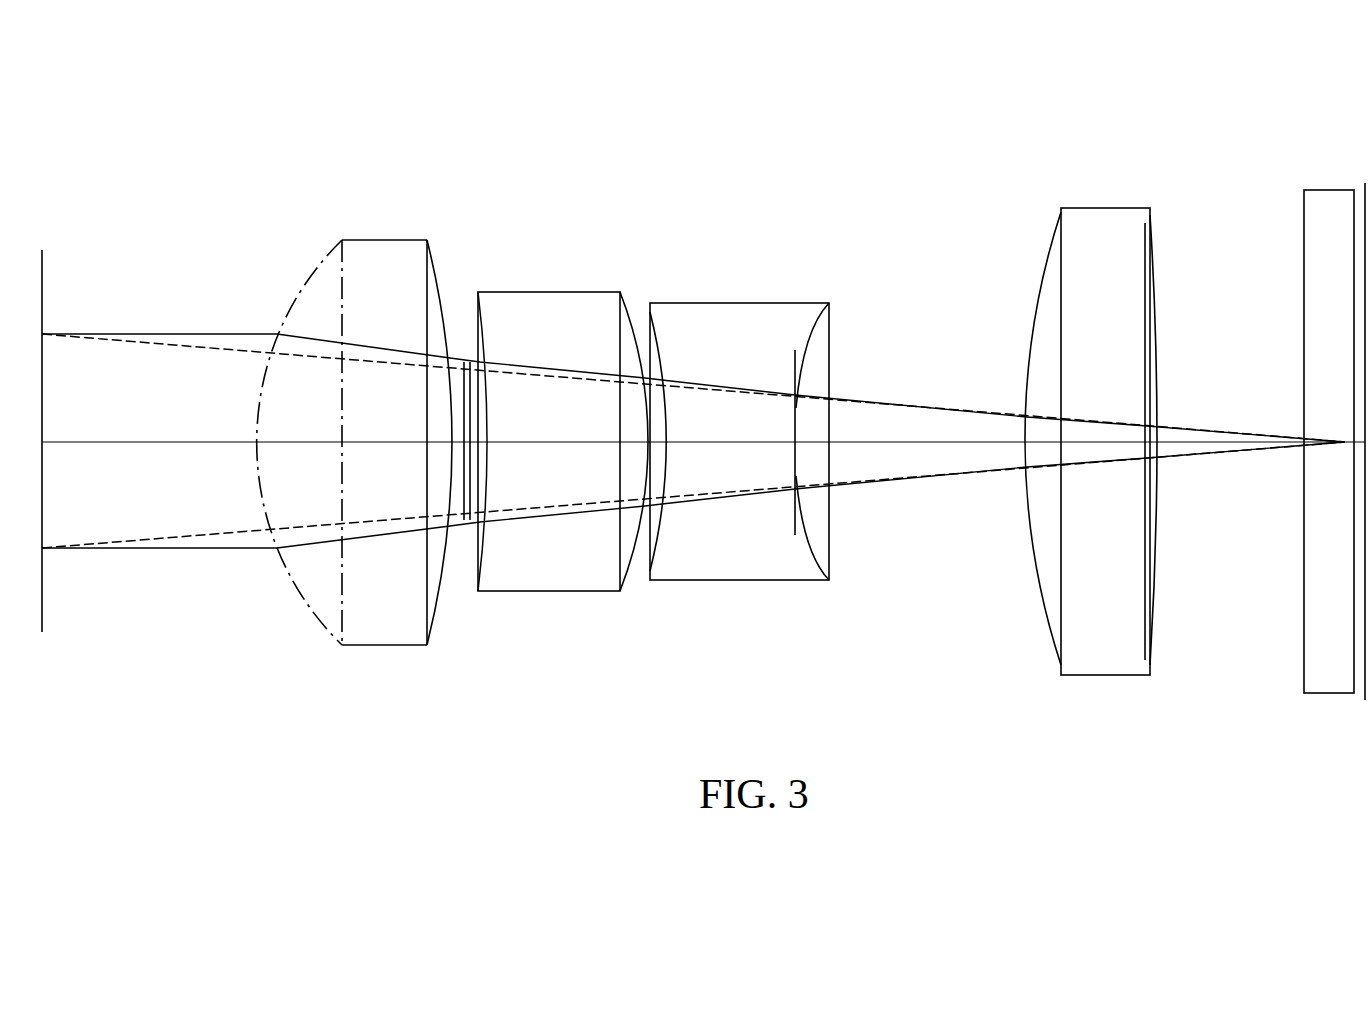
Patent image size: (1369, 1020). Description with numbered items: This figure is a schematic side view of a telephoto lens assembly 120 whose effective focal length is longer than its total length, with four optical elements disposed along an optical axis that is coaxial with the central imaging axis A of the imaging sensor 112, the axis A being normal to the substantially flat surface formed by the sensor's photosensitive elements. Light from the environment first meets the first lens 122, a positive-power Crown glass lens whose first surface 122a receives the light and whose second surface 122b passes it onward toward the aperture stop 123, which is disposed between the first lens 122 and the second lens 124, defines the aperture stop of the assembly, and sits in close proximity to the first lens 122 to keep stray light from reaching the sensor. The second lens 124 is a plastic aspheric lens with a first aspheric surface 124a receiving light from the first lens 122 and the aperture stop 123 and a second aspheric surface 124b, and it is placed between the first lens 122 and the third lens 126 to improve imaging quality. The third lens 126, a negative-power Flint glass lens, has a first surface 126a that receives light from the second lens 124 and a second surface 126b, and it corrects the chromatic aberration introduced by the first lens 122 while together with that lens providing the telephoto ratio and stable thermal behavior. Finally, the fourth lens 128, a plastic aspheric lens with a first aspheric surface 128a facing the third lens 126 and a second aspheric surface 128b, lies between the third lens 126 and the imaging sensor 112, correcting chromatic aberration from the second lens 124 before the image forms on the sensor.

The telephoto lens assembly 120 is at (118, 146).
The central imaging axis A is at (98, 441).
The first lens 122 is at (386, 239).
The first surface 122a is at (294, 300).
The second surface 122b is at (431, 250).
The aperture stop 123 is at (456, 478).
The second lens 124 is at (548, 291).
The first aspheric surface 124a is at (478, 310).
The second aspheric surface 124b is at (624, 298).
The third lens 126 is at (773, 302).
The first surface 126a is at (652, 556).
The second surface 126b is at (831, 543).
The fourth lens 128 is at (1105, 207).
The first aspheric surface 128a is at (1029, 345).
The second aspheric surface 128b is at (1158, 330).
The imaging sensor 112 is at (1327, 189).